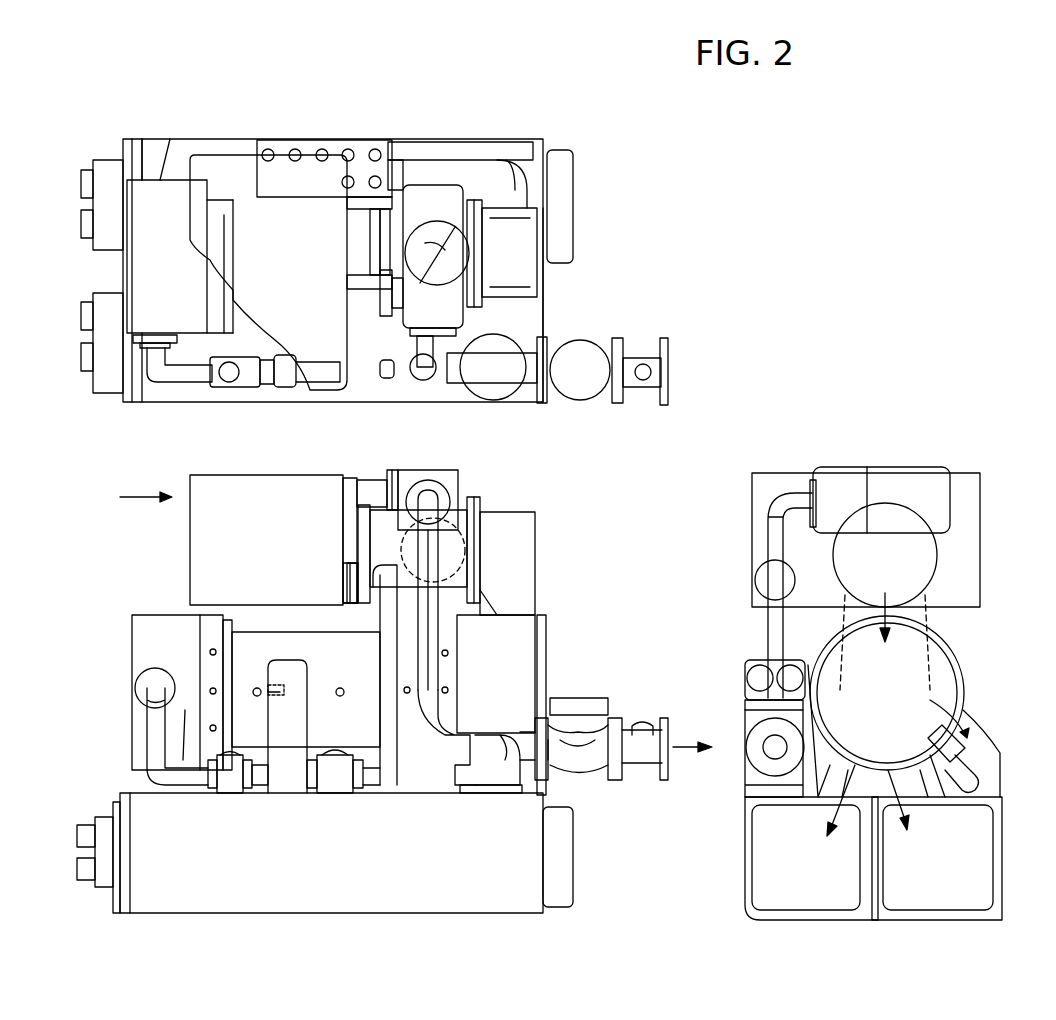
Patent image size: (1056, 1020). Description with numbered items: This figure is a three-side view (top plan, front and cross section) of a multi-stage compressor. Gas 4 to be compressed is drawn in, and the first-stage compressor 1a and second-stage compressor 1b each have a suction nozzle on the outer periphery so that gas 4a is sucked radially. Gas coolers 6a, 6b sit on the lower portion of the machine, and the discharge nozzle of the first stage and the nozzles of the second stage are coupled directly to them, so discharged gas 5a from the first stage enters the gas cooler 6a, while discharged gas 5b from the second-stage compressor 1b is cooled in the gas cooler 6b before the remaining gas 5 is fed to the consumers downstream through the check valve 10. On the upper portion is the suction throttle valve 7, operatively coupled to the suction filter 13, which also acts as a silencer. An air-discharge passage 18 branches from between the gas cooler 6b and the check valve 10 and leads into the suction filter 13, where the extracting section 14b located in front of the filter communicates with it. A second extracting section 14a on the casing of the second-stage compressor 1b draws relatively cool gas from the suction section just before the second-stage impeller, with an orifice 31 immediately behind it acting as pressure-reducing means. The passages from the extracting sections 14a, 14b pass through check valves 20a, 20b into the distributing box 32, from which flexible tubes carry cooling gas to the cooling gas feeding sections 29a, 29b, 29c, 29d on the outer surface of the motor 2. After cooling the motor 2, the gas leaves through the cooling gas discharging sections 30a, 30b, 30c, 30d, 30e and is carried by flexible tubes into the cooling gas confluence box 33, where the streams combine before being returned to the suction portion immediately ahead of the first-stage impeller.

The cooling gas confluence box 33 is at (360, 140).
The suction throttle valve 7 is at (440, 250).
The orifice 31 is at (140, 336).
The inflow direction 4 is at (146, 482).
The suction filter 13 is at (246, 504).
The extracting section 14b is at (345, 577).
The air-discharge passage 18 is at (372, 478).
The motor 2 is at (268, 632).
The second-stage compressor 1b is at (130, 636).
The cooling gas discharging section 30e is at (210, 651).
The cooling gas feeding section 29d is at (210, 727).
The cooling gas discharging section 30d is at (257, 688).
The cooling gas feeding section 29b is at (340, 688).
The cooling gas discharging section 30c is at (284, 687).
The cooling gas feeding section 29c is at (282, 693).
The extracting section 14a is at (140, 683).
The check valve 20a is at (228, 790).
The distributing box 32 is at (297, 790).
The check valve 20b is at (340, 790).
The cooling gas discharging section 30b is at (407, 693).
The cooling gas discharging section 30a is at (448, 653).
The cooling gas feeding section 29a is at (448, 690).
The first-stage compressor 1a is at (547, 640).
The check valve 10 is at (590, 772).
The outflow direction 5 is at (692, 728).
The gas 4a is at (885, 596).
The discharge direction 5a is at (904, 734).
The discharged gas 5b is at (835, 811).
The gas cooler 6a is at (931, 898).
The gas cooler 6b is at (793, 895).